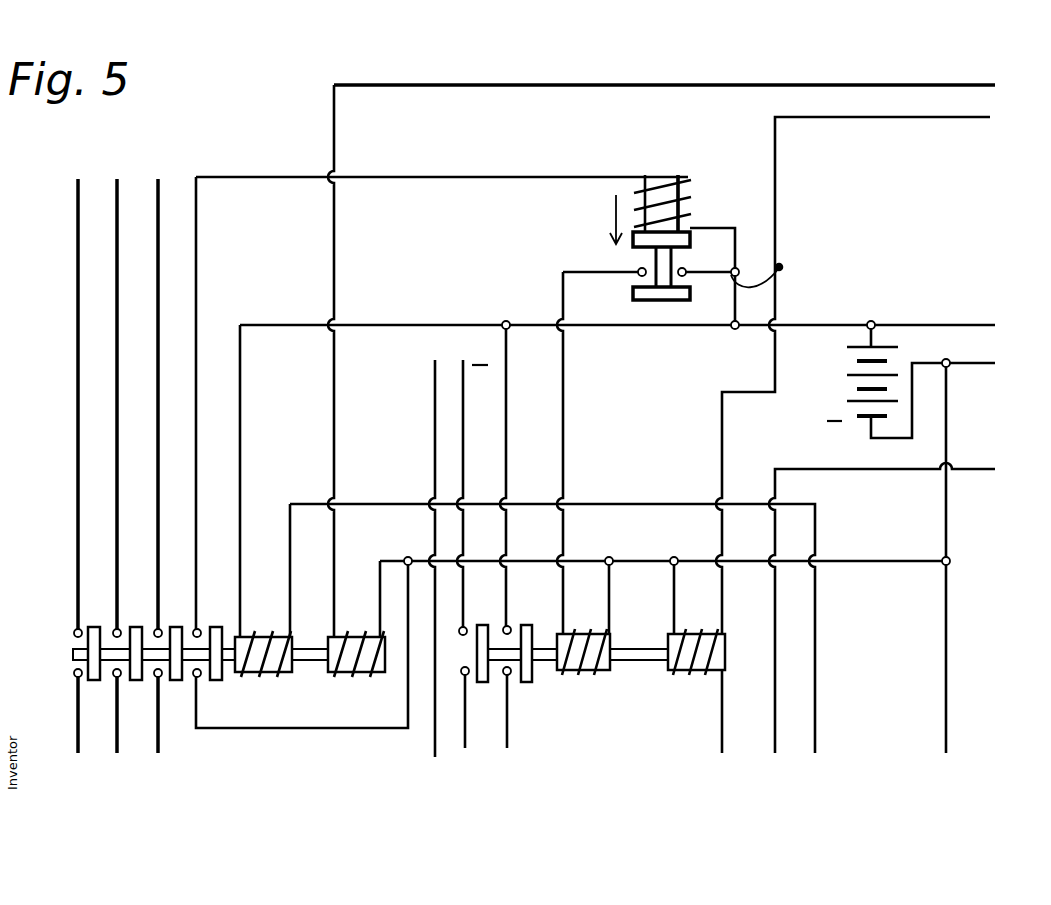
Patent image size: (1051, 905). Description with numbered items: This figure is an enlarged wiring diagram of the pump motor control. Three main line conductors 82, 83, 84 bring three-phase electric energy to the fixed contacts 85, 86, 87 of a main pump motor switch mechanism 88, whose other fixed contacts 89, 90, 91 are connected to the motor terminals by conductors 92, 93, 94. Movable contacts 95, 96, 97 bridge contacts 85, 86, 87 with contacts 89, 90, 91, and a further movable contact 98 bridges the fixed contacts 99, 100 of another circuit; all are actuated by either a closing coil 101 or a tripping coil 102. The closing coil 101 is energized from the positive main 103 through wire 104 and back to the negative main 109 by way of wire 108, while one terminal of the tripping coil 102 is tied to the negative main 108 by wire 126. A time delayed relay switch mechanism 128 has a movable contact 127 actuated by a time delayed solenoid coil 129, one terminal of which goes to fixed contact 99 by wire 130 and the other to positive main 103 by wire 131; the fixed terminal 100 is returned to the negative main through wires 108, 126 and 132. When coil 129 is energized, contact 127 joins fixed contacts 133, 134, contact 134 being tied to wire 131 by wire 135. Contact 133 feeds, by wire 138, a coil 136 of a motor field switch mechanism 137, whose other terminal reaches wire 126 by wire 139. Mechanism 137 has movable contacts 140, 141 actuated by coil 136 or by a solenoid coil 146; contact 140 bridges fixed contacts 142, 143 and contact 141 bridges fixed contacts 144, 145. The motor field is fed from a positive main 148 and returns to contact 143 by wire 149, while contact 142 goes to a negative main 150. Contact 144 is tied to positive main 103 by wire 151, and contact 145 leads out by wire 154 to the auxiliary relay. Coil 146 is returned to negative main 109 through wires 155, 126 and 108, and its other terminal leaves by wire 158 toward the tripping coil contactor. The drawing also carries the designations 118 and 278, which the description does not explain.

The main line conductor 82 is at (73, 233).
The main line conductor 83 is at (114, 271).
The main line conductor 84 is at (154, 307).
The fixed contact 85 is at (74, 630).
The fixed contact 86 is at (113, 630).
The fixed contact 87 is at (154, 630).
The main pump motor switch mechanism 88 is at (229, 681).
The fixed contact 89 is at (75, 677).
The fixed contact 90 is at (114, 677).
The fixed contact 91 is at (155, 677).
The conductor 92 is at (76, 759).
The conductor 93 is at (115, 759).
The conductor 94 is at (157, 759).
The movable contact 95 is at (88, 656).
The movable contact 96 is at (135, 627).
The movable contact 97 is at (172, 627).
The movable contact 98 is at (220, 680).
The fixed contact 99 is at (199, 629).
The fixed contact 100 is at (195, 677).
The closing coil 101 is at (270, 632).
The tripping coil 102 is at (361, 632).
The positive main 103 is at (243, 428).
The wire 104 is at (319, 503).
The negative main 108 is at (948, 417).
The negative main 109 is at (926, 370).
The conductor 118 is at (890, 476).
The wire 126 is at (403, 560).
The movable contact 127 is at (633, 294).
The time delayed relay switch mechanism 128 is at (693, 203).
The time delayed solenoid coil 129 is at (641, 184).
The wire 130 is at (485, 177).
The wire 131 is at (736, 237).
The wire 132 is at (322, 729).
The fixed contact 133 is at (638, 271).
The fixed contact 134 is at (686, 271).
The wire 135 is at (782, 272).
The solenoid coil 136 is at (586, 675).
The motor field switch mechanism 137 is at (601, 671).
The wire 138 is at (565, 421).
The wire 139 is at (609, 601).
The movable contact 140 is at (482, 627).
The movable contact 141 is at (538, 621).
The fixed contact 142 is at (461, 635).
The fixed contact 143 is at (467, 677).
The fixed contact 144 is at (510, 626).
The fixed contact 145 is at (509, 677).
The solenoid coil 146 is at (708, 675).
The positive main 148 is at (432, 413).
The wire 149 is at (465, 749).
The negative main 150 is at (465, 407).
The wire 151 is at (508, 470).
The wire 154 is at (507, 749).
The wire 155 is at (674, 601).
The wire 158 is at (914, 120).
The conductor 278 is at (380, 86).